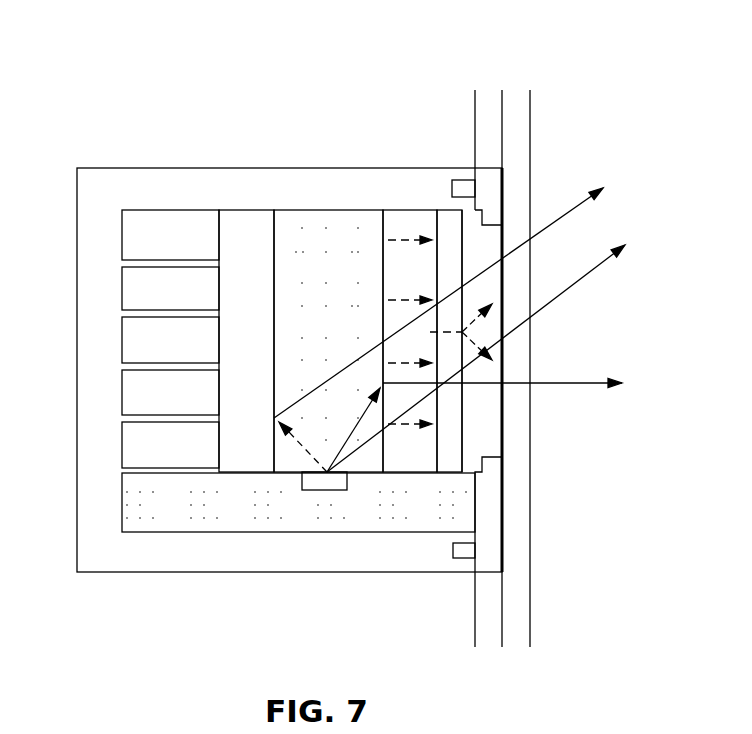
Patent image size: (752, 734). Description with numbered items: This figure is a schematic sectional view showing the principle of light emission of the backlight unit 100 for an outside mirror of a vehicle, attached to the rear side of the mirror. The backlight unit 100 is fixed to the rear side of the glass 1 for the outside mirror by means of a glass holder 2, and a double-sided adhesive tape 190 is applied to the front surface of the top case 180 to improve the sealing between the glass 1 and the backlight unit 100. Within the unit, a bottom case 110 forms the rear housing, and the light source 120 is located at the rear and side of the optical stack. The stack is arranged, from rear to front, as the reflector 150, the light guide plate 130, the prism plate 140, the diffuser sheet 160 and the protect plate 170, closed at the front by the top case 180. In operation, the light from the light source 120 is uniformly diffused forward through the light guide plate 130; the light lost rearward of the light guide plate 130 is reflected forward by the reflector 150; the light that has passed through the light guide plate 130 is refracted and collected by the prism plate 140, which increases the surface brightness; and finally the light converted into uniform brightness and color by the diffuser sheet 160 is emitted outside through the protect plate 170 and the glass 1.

The backlight unit 100 is at (391, 32).
The bottom case 110 is at (142, 182).
The light source 120 is at (382, 510).
The light guide plate 130 is at (327, 223).
The prism plate 140 is at (408, 222).
The reflector 150 is at (251, 218).
The diffuser sheet 160 is at (450, 443).
The protect plate 170 is at (485, 415).
The top case 180 is at (487, 177).
The double-sided adhesive tape 190 is at (503, 190).
The glass 1 is at (523, 527).
The glass holder 2 is at (493, 610).